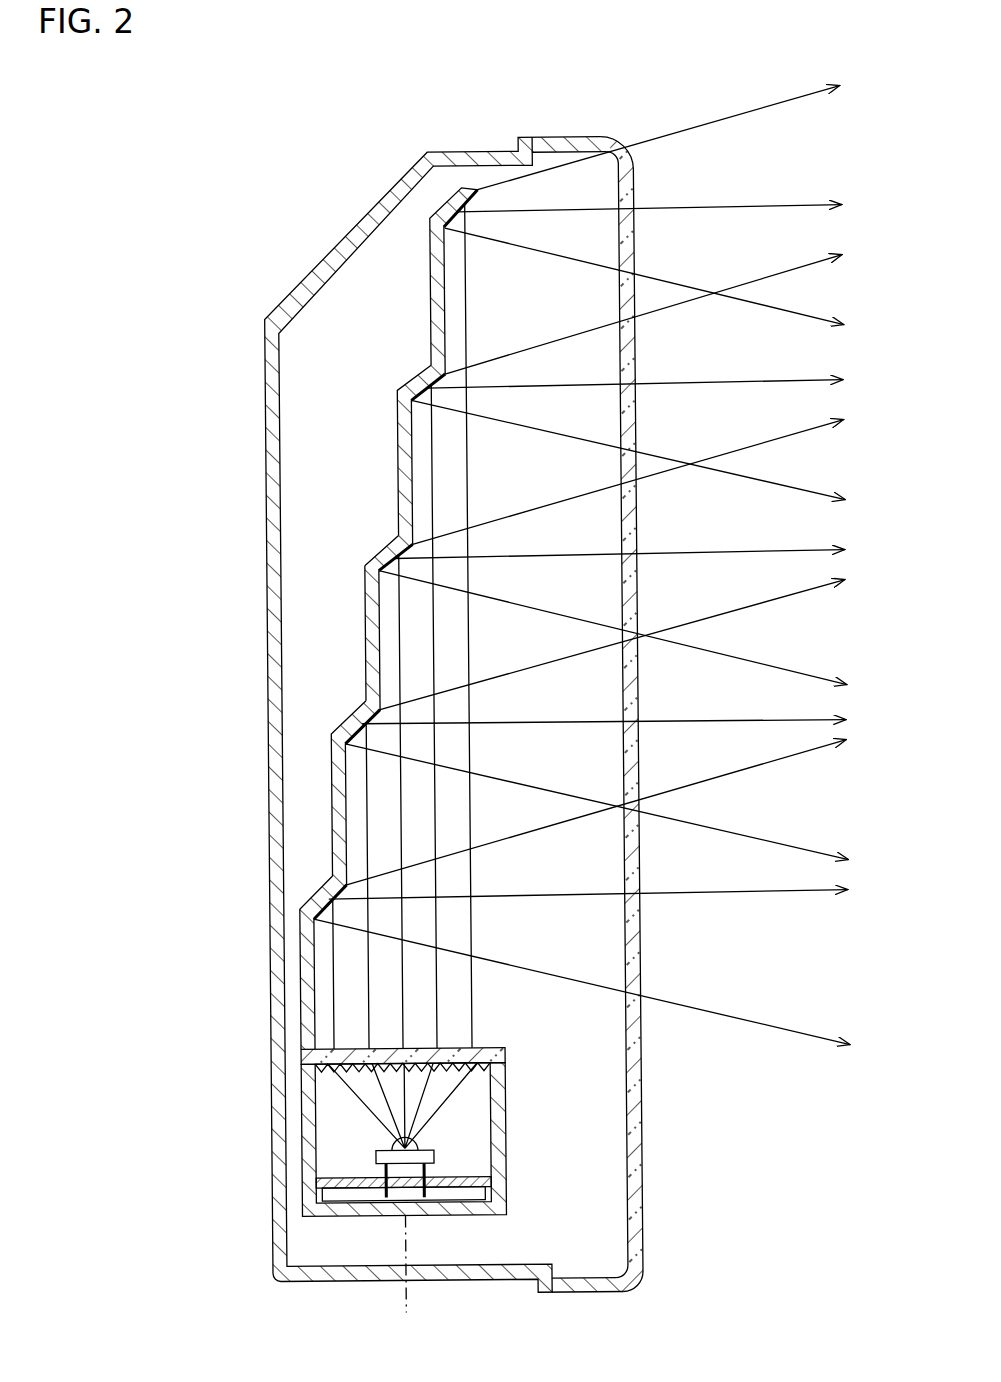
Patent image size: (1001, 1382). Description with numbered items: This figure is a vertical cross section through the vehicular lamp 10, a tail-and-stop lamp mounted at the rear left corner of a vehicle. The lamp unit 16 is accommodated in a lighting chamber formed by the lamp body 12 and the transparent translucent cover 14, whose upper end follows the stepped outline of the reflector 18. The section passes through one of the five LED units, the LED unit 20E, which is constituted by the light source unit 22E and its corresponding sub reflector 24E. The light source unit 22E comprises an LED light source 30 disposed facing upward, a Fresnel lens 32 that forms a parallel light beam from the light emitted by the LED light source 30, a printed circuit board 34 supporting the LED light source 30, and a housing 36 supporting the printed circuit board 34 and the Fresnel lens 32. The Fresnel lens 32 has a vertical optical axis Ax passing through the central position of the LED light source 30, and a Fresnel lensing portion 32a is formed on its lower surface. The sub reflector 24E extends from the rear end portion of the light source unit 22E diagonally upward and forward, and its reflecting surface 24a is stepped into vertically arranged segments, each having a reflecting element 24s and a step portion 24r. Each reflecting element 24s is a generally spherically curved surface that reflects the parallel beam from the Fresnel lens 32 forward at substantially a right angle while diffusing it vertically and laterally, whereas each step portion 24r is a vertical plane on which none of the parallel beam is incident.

The vehicular lamp 10 is at (251, 191).
The lamp body 12 is at (405, 174).
The translucent cover 14 is at (640, 186).
The lamp unit 16 is at (339, 451).
The reflector 18 is at (361, 579).
The LED unit 20E is at (166, 908).
The light source unit 22E is at (294, 1091).
The sub reflector 24E is at (331, 842).
The reflecting surface 24a is at (417, 493).
The reflecting element 24s is at (414, 556).
The step portion 24r is at (381, 614).
The LED light source 30 is at (391, 1148).
The Fresnel lens 32 is at (486, 1046).
The Fresnel lensing portion 32a is at (355, 1070).
The printed circuit board 34 is at (448, 1178).
The housing 36 is at (497, 1125).
The optical axis Ax is at (401, 1236).